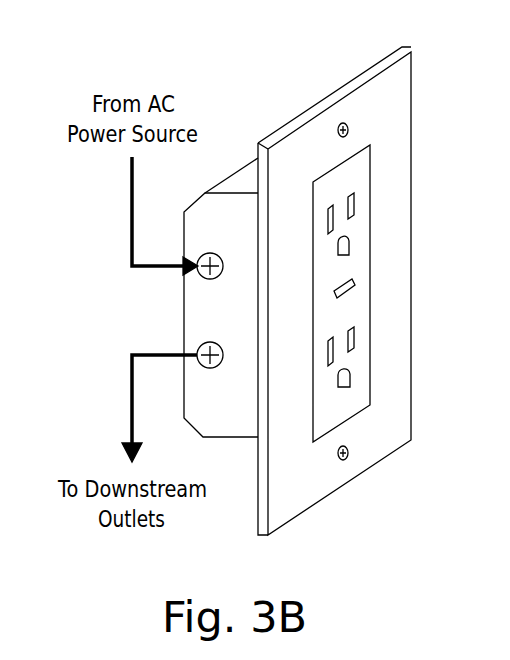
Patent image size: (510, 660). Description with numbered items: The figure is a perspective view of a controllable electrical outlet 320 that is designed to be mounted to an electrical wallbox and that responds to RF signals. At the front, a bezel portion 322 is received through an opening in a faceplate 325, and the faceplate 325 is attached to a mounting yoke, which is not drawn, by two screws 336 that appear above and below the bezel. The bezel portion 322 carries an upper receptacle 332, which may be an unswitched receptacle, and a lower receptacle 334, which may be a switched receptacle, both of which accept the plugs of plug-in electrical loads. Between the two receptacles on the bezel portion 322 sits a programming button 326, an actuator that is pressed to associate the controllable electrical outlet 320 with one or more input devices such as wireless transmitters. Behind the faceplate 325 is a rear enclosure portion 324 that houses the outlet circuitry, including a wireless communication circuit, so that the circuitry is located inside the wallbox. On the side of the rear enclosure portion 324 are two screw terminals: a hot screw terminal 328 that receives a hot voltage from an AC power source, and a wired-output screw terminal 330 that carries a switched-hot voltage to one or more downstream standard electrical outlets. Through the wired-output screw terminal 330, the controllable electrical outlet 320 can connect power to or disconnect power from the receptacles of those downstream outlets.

The controllable electrical outlet 320 is at (271, 106).
The bezel portion 322 is at (355, 257).
The rear enclosure portion 324 is at (203, 313).
The faceplate 325 is at (390, 348).
The programming button 326 is at (351, 286).
The hot screw terminal 328 is at (197, 272).
The wired-output screw terminal 330 is at (197, 350).
The upper receptacle 332 is at (336, 186).
The lower receptacle 334 is at (348, 400).
The screws 336 is at (349, 129).